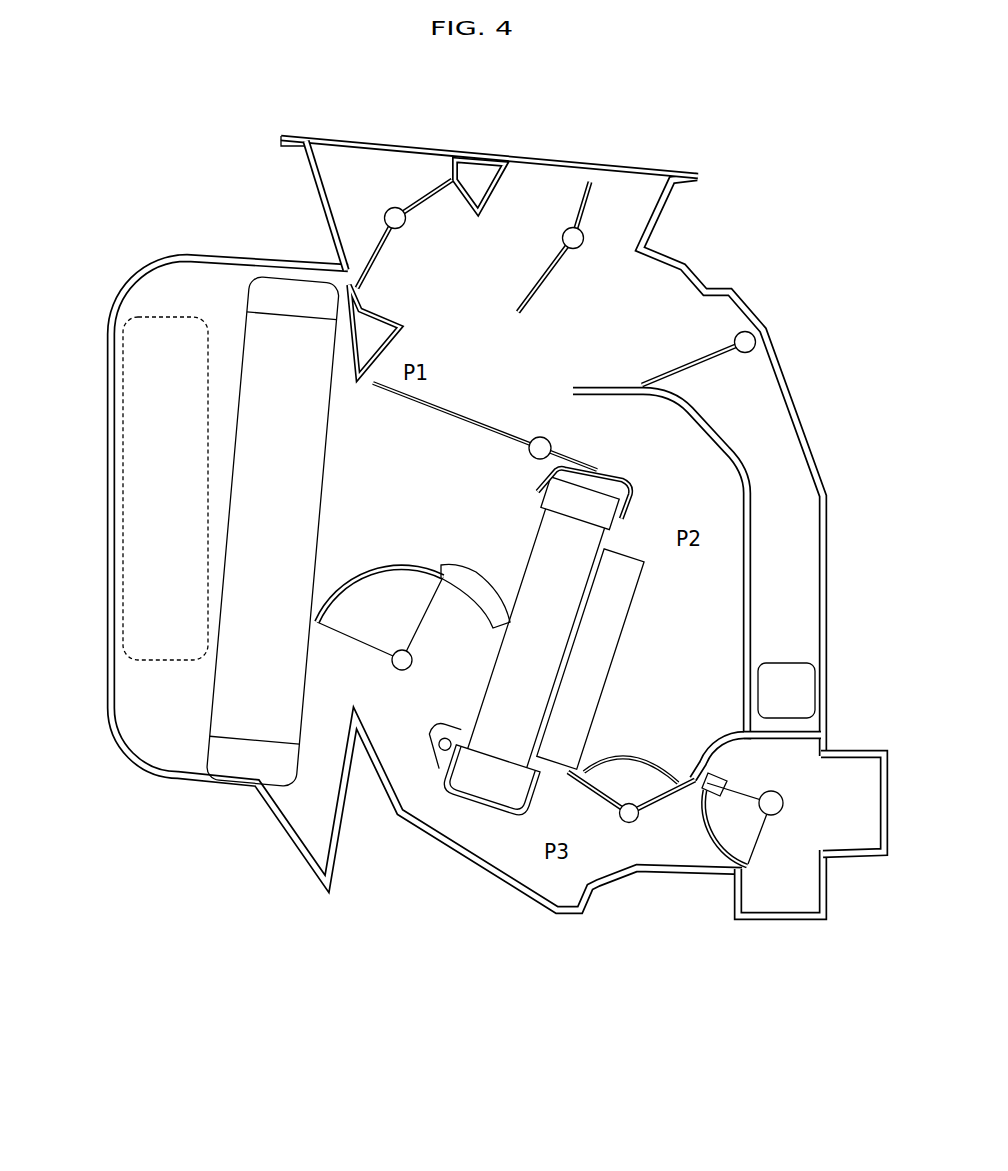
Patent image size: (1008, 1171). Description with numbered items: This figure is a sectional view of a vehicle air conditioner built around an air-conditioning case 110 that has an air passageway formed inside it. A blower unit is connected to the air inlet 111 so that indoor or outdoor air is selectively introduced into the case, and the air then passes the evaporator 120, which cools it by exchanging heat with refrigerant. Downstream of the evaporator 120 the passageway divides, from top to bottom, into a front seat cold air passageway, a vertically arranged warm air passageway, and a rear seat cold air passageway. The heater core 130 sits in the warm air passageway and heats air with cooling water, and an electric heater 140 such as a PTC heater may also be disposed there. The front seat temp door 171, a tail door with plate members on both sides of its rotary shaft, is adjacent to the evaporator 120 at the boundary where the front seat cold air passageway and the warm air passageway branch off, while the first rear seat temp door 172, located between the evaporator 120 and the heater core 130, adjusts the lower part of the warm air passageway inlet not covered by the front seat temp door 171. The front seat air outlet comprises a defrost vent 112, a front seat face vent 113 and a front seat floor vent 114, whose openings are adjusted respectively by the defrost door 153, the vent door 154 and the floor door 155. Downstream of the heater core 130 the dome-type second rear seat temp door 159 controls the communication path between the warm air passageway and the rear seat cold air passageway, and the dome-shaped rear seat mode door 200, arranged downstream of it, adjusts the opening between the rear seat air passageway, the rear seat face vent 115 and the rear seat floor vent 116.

The air-conditioning case 110 is at (220, 253).
The air inlet 111 is at (167, 653).
The defrost vent 112 is at (393, 176).
The front seat face vent 113 is at (545, 187).
The front seat floor vent 114 is at (812, 683).
The rear seat face vent 115 is at (860, 808).
The rear seat floor vent 116 is at (780, 905).
The evaporator 120 is at (247, 720).
The heater core 130 is at (502, 740).
The electric heater 140 is at (623, 592).
The defrost door 153 is at (377, 243).
The vent door 154 is at (590, 205).
The floor door 155 is at (693, 368).
The second rear seat temp door 159 is at (662, 803).
The front seat temp door 171 is at (405, 403).
The first rear seat temp door 172 is at (343, 580).
The rear seat mode door 200 is at (708, 833).